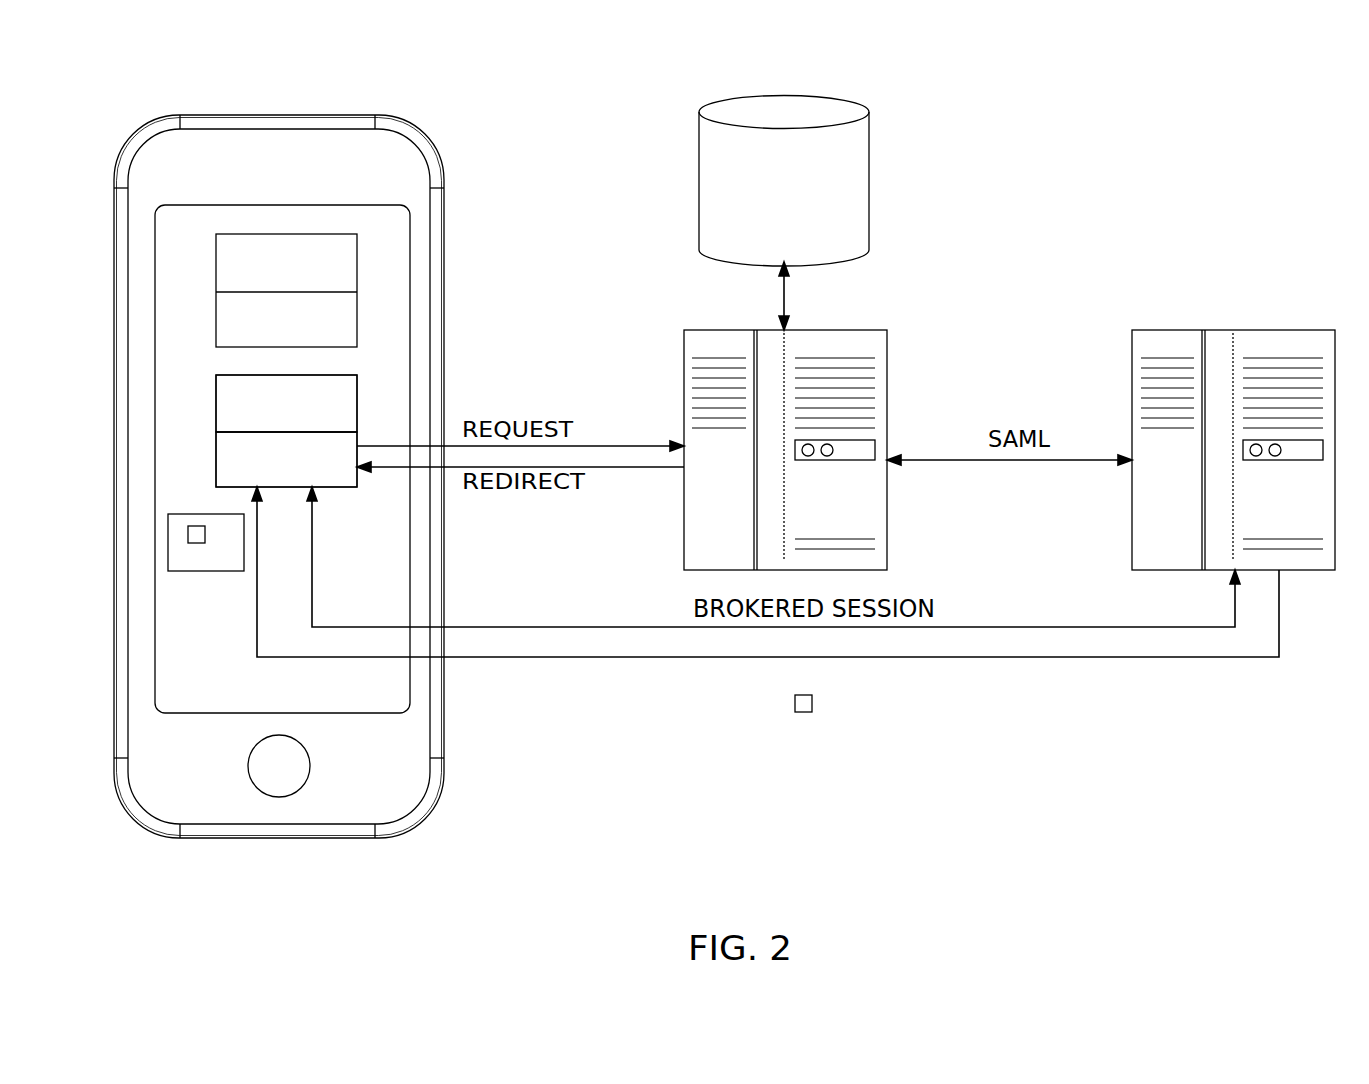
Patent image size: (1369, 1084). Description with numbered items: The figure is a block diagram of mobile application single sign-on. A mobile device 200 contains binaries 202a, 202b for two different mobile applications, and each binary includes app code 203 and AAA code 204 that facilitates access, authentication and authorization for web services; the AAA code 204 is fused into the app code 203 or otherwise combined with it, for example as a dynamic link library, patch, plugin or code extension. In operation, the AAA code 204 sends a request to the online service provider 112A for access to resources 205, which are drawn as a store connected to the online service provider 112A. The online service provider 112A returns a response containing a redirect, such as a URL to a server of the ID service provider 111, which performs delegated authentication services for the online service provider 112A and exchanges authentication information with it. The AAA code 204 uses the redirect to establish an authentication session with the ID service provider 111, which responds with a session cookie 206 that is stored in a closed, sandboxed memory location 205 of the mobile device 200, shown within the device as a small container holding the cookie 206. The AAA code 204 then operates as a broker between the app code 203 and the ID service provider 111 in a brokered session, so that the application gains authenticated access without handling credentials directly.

The mobile device 200 is at (415, 128).
The binary 202a is at (393, 268).
The binary 202b is at (395, 361).
The app code 203 is at (216, 392).
The AAA code 204 is at (216, 452).
The resources 205 is at (243, 571).
The session cookie 206 is at (197, 543).
The online service provider 112A is at (915, 335).
The ID service provider 111 is at (1225, 295).